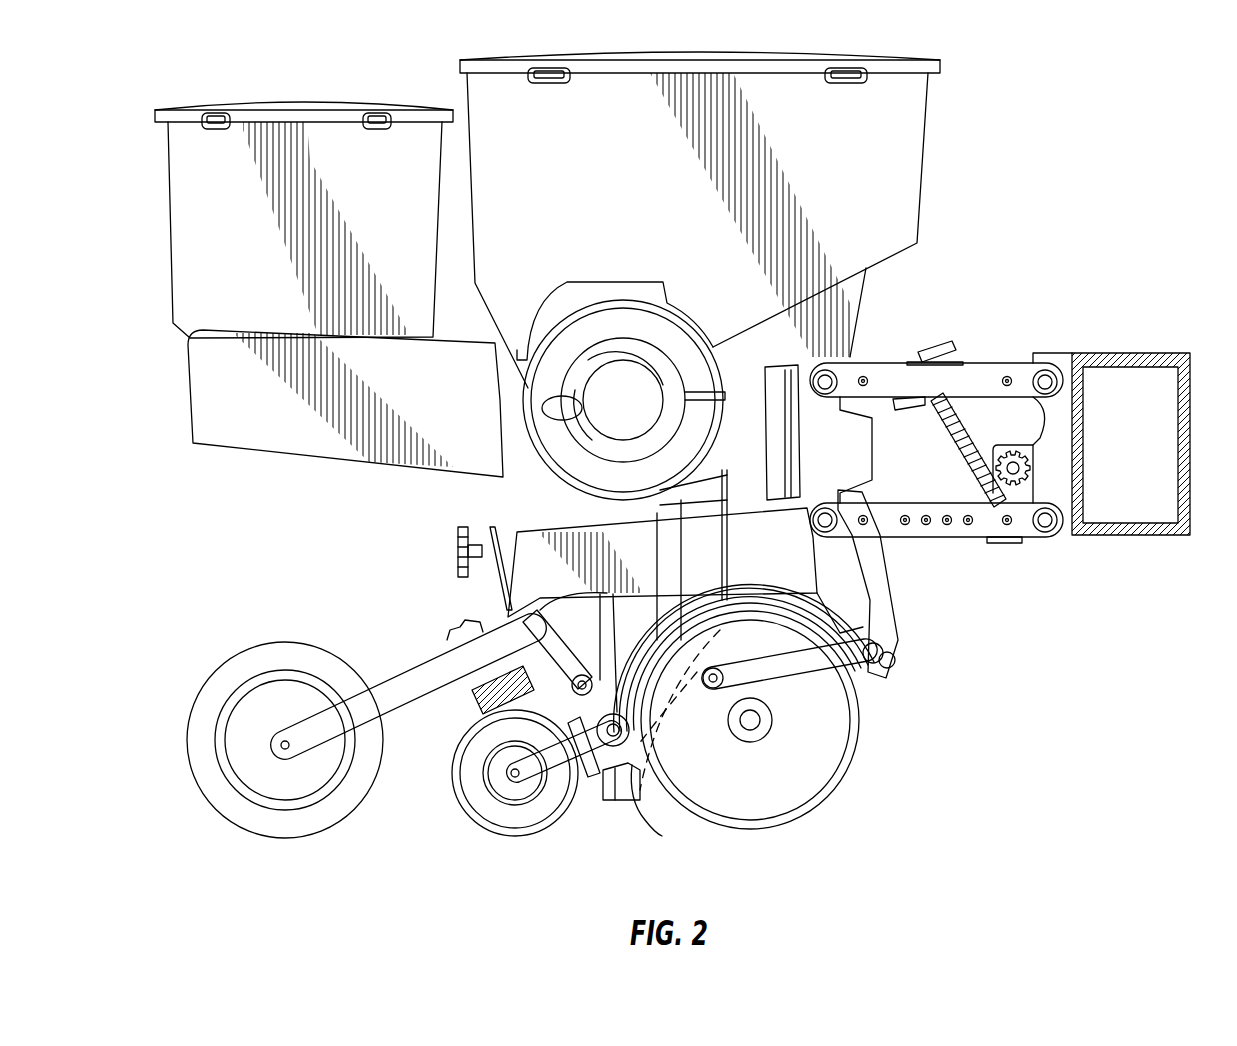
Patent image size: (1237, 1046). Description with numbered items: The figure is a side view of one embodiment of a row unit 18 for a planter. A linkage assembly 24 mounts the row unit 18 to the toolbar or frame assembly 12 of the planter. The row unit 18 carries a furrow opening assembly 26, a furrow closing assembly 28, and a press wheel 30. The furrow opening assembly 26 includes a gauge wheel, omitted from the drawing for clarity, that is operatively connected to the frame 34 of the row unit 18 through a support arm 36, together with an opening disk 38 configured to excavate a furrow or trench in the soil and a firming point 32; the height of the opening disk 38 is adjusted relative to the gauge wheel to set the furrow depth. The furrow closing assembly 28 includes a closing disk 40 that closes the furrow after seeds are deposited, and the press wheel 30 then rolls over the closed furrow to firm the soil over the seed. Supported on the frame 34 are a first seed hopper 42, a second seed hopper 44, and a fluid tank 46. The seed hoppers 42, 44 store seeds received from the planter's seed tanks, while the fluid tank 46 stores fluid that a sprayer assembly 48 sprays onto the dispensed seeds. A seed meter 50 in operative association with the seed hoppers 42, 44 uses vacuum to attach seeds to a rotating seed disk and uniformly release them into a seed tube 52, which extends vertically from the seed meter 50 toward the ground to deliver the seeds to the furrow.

The toolbar or frame assembly 12 is at (1131, 343).
The row unit 18 is at (1046, 187).
The linkage assembly 24 is at (992, 562).
The furrow opening assembly 26 is at (905, 739).
The furrow closing assembly 28 is at (452, 814).
The press wheel 30 is at (230, 678).
The firming point 32 is at (650, 802).
The frame 34 is at (253, 437).
The support arm 36 is at (880, 620).
The opening disk 38 is at (820, 772).
The closing disk 40 is at (547, 810).
The first seed hopper 42 is at (700, 220).
The second seed hopper 44 is at (610, 172).
The fluid tank 46 is at (382, 213).
The sprayer assembly 48 is at (620, 783).
The seed meter 50 is at (705, 307).
The seed tube 52 is at (708, 545).